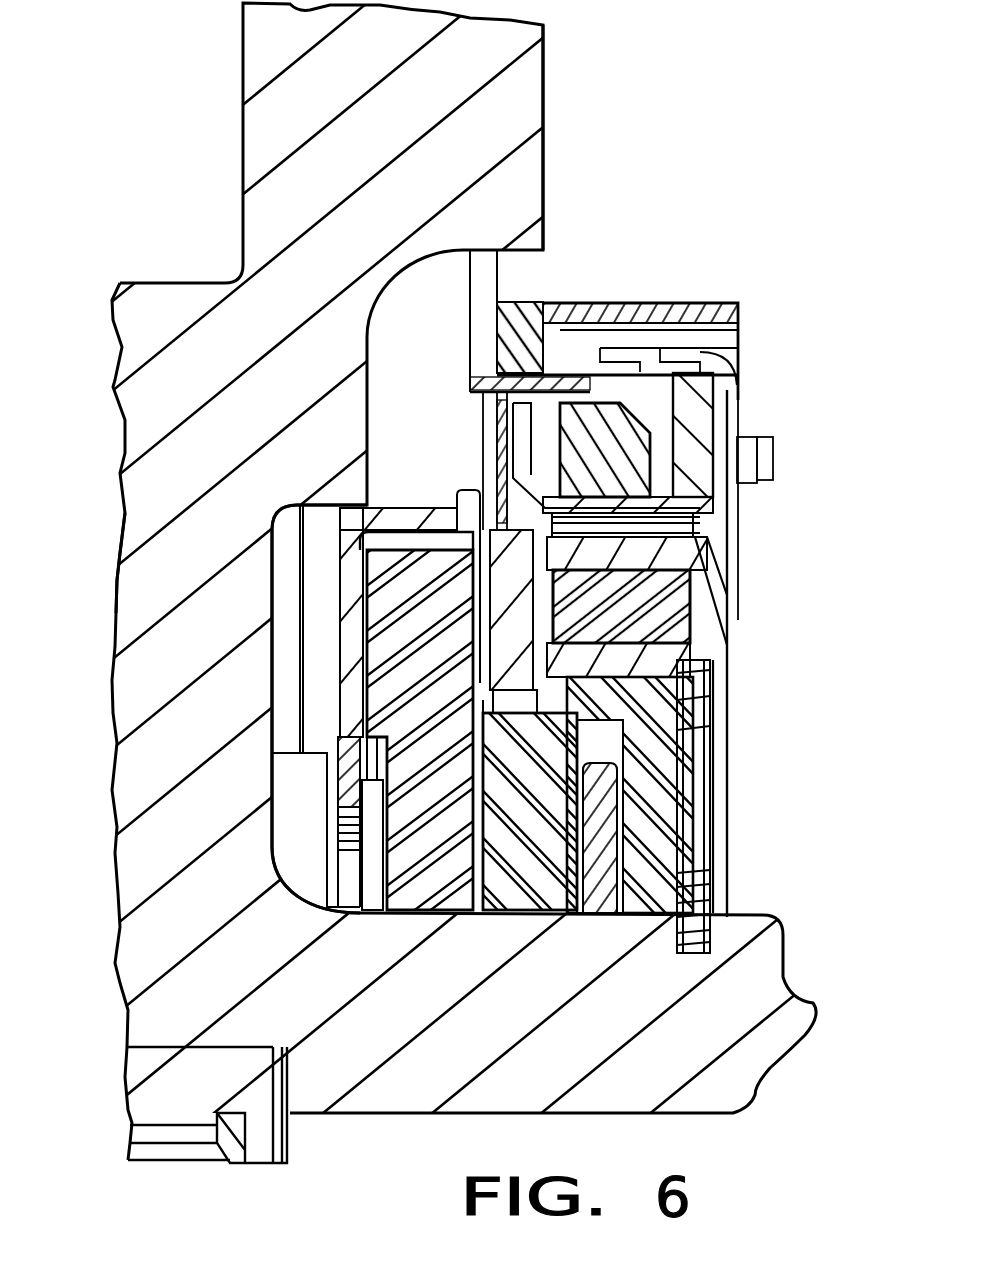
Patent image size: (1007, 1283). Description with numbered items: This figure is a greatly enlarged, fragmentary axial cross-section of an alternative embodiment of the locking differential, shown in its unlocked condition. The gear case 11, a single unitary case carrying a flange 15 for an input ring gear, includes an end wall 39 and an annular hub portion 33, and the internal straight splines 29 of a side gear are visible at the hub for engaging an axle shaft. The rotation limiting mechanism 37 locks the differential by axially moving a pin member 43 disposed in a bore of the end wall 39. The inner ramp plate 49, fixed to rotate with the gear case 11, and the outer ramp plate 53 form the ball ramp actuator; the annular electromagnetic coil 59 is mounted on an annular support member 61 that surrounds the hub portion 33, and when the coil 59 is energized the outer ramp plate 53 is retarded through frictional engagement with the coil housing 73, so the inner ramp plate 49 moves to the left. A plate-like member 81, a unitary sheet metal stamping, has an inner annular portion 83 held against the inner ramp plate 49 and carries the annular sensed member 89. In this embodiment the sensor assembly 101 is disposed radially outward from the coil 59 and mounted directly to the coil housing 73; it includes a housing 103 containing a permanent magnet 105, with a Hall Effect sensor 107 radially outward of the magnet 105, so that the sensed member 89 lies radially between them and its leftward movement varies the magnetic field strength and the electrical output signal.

The gear case 11 is at (178, 312).
The flange 15 is at (527, 88).
The internal straight splines 29 is at (170, 1130).
The annular hub portion 33 is at (727, 1080).
The rotation limiting mechanism 37 is at (746, 720).
The end wall 39 is at (153, 588).
The pin member 43 is at (303, 840).
The inner ramp plate 49 is at (443, 910).
The outer ramp plate 53 is at (522, 910).
The electromagnetic coil 59 is at (655, 620).
The annular support member 61 is at (643, 840).
The coil housing 73 is at (700, 605).
The plate-like member 81 is at (338, 668).
The inner annular portion 83 is at (350, 777).
The annular sensed member 89 is at (497, 373).
The sensor assembly 101 is at (676, 245).
The housing 103 is at (723, 383).
The permanent magnet 105 is at (618, 455).
The Hall Effect sensor 107 is at (630, 343).